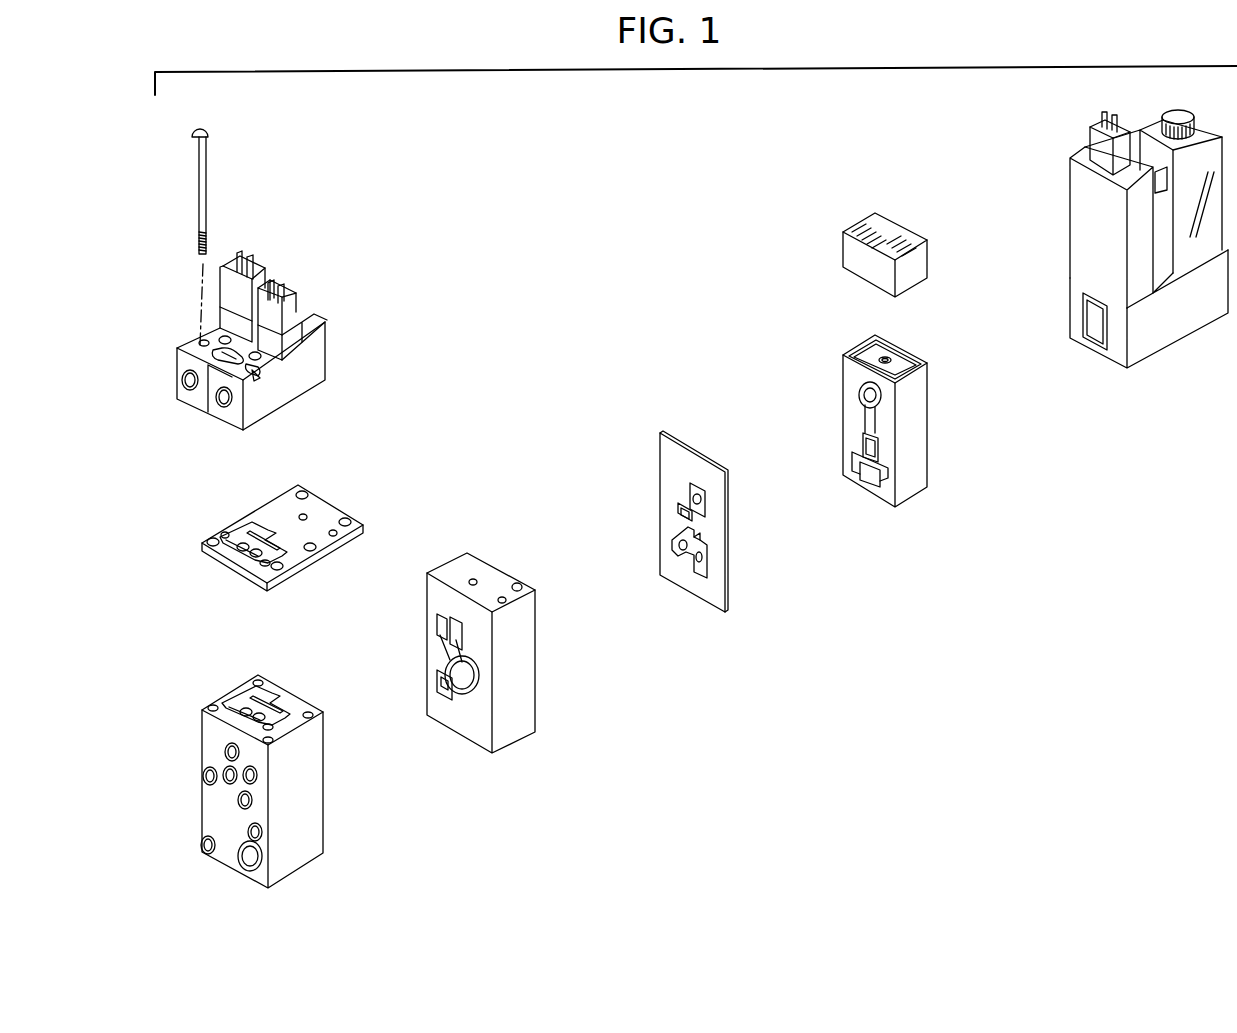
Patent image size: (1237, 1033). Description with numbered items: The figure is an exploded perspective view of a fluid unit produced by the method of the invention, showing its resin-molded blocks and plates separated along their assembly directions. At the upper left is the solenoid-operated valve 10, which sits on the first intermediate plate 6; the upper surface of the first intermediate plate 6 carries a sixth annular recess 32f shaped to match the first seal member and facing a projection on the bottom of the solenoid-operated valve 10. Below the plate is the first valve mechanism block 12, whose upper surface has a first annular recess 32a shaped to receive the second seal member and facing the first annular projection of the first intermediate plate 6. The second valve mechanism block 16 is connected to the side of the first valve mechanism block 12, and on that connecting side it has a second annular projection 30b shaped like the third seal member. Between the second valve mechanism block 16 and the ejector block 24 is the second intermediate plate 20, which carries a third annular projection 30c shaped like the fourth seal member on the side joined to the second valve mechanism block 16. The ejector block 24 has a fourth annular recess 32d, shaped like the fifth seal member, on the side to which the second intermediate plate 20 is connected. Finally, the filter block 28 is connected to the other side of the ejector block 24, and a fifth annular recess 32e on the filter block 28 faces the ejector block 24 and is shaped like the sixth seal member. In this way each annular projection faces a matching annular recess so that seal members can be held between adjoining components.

The solenoid-operated valve 10 is at (334, 356).
The first intermediate plate 6 is at (282, 521).
The sixth annular recess 32f is at (268, 524).
The first valve mechanism block 12 is at (293, 773).
The first annular recess 32a is at (265, 692).
The second valve mechanism block 16 is at (513, 669).
The second annular projection 30b is at (468, 697).
The second intermediate plate 20 is at (672, 548).
The third annular projection 30c is at (680, 567).
The ejector block 24 is at (894, 435).
The fourth annular recess 32d is at (858, 468).
The filter block 28 is at (1135, 250).
The fifth annular recess 32e is at (1092, 340).